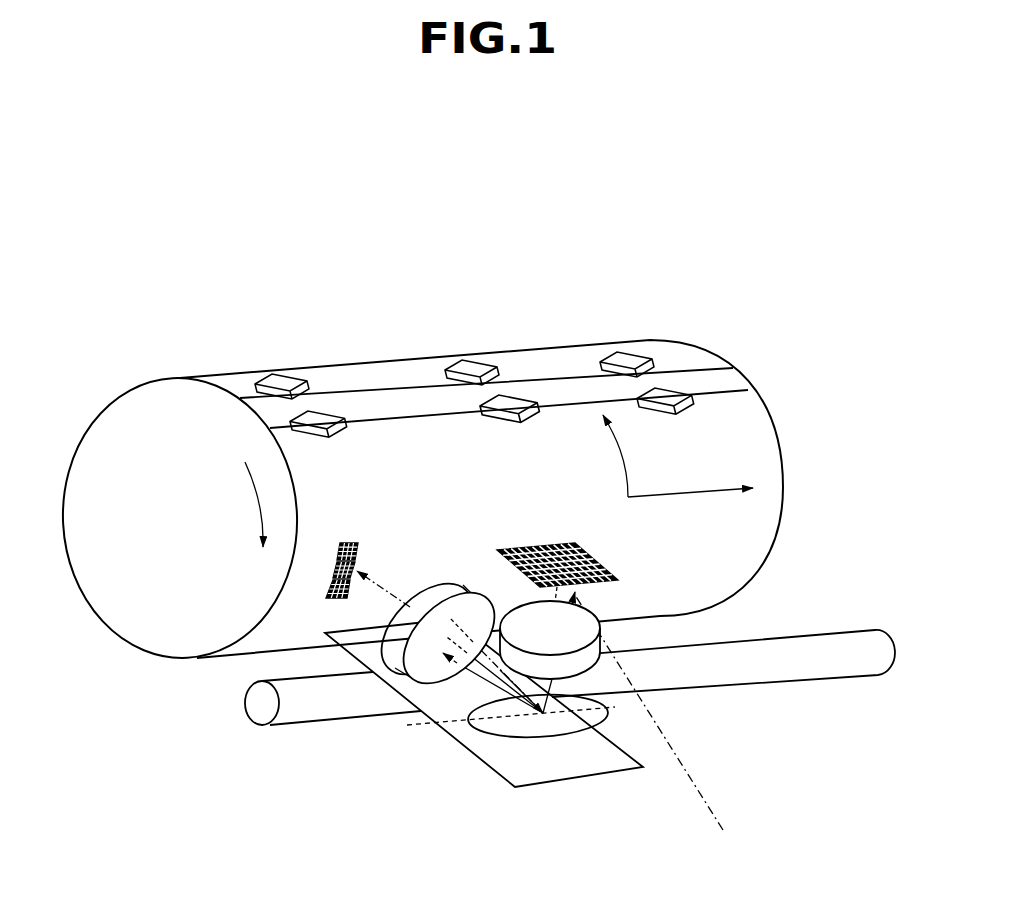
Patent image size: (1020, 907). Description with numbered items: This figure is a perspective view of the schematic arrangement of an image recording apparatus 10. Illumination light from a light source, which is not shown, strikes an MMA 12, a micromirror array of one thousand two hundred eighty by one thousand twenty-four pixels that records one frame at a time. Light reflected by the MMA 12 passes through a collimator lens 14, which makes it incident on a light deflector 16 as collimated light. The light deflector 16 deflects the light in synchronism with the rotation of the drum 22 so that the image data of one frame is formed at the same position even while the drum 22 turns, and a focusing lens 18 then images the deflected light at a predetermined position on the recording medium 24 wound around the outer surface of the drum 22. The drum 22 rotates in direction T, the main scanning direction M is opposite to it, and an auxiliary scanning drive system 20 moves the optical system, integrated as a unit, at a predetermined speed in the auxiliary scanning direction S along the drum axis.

The image recording apparatus 10 is at (610, 258).
The MMA 12 is at (627, 577).
The collimator lens 14 is at (583, 665).
The light deflector 16 is at (522, 722).
The focusing lens 18 is at (423, 665).
The auxiliary scanning drive system 20 is at (345, 732).
The drum 22 is at (153, 432).
The recording medium 24 is at (383, 455).